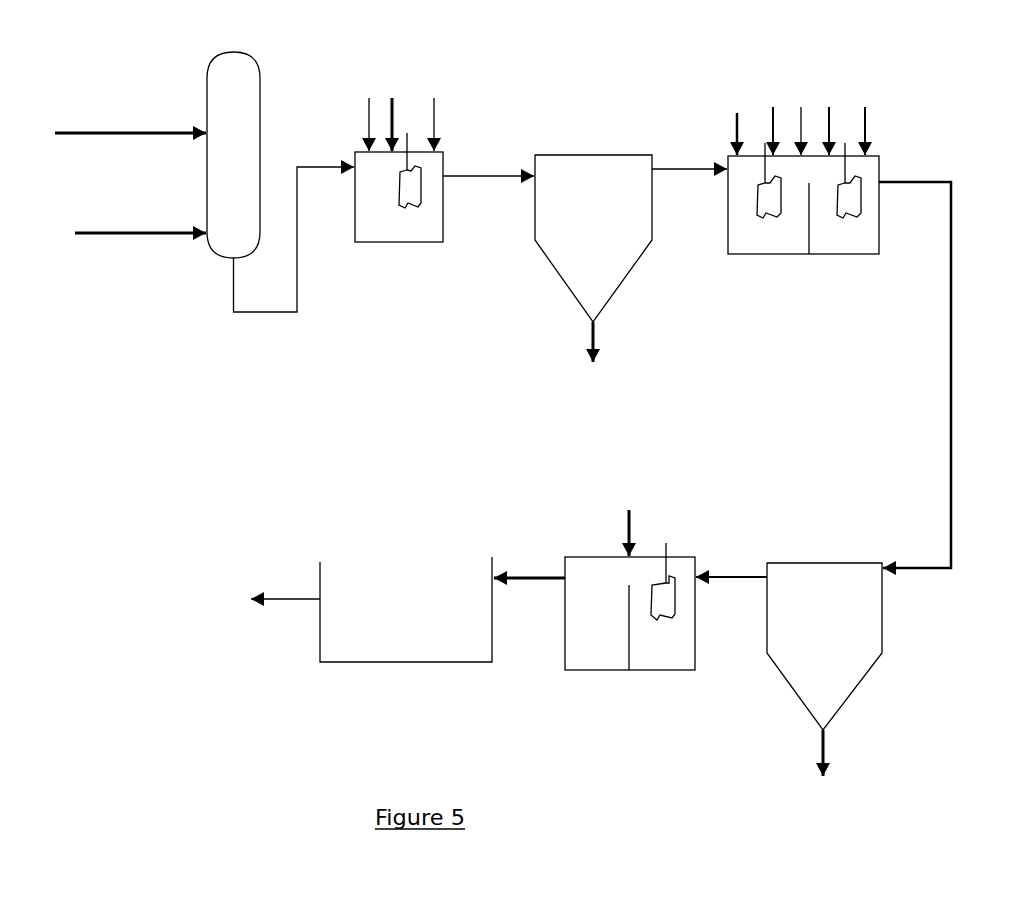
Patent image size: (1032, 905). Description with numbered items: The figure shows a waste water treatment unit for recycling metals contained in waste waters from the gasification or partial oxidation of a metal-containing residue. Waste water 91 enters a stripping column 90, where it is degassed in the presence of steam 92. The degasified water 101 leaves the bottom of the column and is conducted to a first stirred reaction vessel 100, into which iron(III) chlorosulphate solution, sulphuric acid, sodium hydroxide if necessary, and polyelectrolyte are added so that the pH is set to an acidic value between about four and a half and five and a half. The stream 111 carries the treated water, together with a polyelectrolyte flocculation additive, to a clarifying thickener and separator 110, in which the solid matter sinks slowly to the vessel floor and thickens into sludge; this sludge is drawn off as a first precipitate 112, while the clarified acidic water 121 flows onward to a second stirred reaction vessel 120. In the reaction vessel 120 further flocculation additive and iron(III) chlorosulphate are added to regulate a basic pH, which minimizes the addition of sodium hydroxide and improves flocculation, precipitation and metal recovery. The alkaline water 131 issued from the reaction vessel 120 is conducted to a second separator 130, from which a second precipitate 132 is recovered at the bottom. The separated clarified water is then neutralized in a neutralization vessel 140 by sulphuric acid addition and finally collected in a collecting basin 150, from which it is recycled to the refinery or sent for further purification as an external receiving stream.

The stripping column 90 is at (246, 152).
The waste water 91 is at (130, 107).
The steam 92 is at (140, 233).
The degasified water 101 is at (294, 253).
The first stirred reaction vessel 100 is at (414, 232).
The line from reaction vessel to separator 111 is at (488, 162).
The clarifying thickener and separator 110 is at (618, 220).
The first precipitate 112 is at (625, 342).
The acidic water 121 is at (689, 157).
The reaction vessel 120 is at (880, 167).
The alkaline water 131 is at (938, 375).
The second separator 130 is at (844, 627).
The second precipitate 132 is at (853, 760).
The neutralization vessel 140 is at (580, 672).
The collecting basin 150 is at (423, 603).